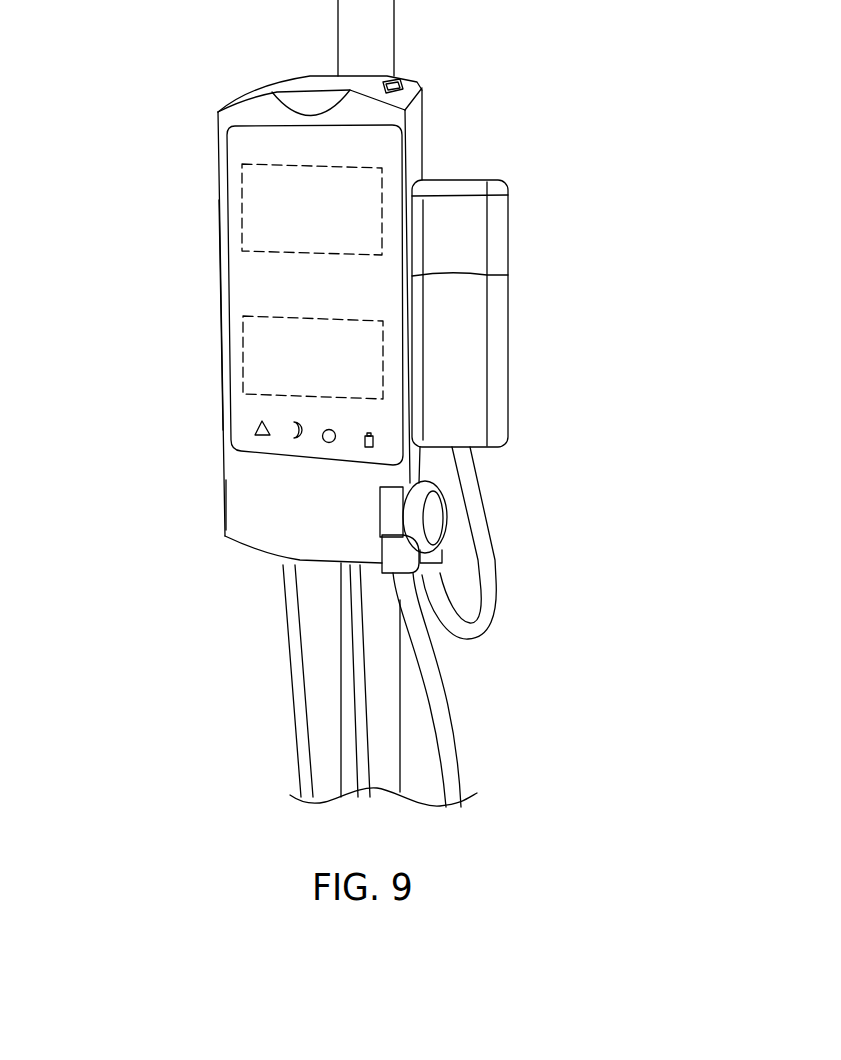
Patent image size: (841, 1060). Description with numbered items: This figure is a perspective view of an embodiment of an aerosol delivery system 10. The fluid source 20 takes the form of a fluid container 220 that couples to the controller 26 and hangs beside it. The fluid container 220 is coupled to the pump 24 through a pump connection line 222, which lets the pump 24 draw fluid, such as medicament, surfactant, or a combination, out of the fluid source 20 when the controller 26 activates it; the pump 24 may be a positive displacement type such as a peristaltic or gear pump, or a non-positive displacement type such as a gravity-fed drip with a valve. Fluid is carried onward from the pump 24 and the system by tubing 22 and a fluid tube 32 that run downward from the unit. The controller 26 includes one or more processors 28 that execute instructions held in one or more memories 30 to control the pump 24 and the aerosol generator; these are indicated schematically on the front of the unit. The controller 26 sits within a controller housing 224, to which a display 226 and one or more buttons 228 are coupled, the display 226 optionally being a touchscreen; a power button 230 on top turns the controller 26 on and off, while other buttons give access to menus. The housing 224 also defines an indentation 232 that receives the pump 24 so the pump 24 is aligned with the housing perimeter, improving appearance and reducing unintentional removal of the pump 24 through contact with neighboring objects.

The aerosol delivery system 10 is at (81, 548).
The fluid source 20 is at (524, 235).
The tubing 22 is at (446, 745).
The pump 24 is at (434, 520).
The controller 26 is at (173, 263).
The processors 28 is at (243, 206).
The memories 30 is at (243, 351).
The fluid tube 32 is at (292, 738).
The fluid container 220 is at (507, 332).
The pump connection line 222 is at (471, 502).
The controller housing 224 is at (224, 492).
The display 226 is at (270, 408).
The buttons 228 is at (290, 512).
The power button 230 is at (423, 68).
The indentation 232 is at (380, 519).